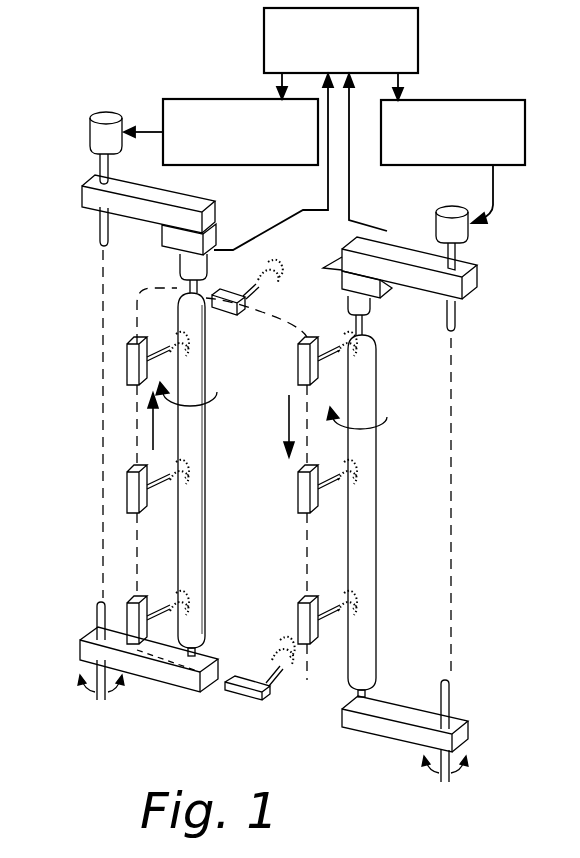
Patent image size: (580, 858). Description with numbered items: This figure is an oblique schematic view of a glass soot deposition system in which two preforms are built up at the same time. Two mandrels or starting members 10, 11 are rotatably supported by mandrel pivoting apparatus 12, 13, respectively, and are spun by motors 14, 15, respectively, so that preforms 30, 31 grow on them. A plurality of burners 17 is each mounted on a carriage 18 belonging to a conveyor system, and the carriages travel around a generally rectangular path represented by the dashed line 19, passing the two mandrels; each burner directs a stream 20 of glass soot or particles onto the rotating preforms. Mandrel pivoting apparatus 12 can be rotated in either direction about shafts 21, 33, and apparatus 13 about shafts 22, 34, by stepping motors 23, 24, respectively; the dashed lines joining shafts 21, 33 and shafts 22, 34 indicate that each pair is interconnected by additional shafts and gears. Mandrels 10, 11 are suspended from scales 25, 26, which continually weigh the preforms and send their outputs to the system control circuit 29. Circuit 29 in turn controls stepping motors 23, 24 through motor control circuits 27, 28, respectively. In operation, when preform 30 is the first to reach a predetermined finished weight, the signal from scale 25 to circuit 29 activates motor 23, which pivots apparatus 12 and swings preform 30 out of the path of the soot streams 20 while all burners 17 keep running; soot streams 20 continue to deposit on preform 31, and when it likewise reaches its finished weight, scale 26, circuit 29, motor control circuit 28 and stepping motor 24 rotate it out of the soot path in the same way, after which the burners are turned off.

The mandrel 10 is at (195, 652).
The mandrel 11 is at (356, 697).
The mandrel pivoting apparatus 12 is at (75, 212).
The mandrel pivoting apparatus 13 is at (484, 299).
The motor 14 is at (184, 265).
The motor 15 is at (368, 307).
The burner 17 is at (322, 600).
The carriage 18 is at (299, 496).
The dashed line 19 is at (290, 695).
The soot stream 20 is at (358, 474).
The shaft 21 is at (105, 701).
The shaft 22 is at (440, 781).
The stepping motor 23 is at (107, 115).
The stepping motor 24 is at (445, 212).
The scale 25 is at (213, 246).
The scale 26 is at (348, 283).
The motor control circuit 27 is at (207, 98).
The motor control circuit 28 is at (478, 98).
The system control circuit 29 is at (421, 39).
The preform 30 is at (194, 367).
The preform 31 is at (369, 375).
The shaft 33 is at (97, 167).
The shaft 34 is at (457, 256).